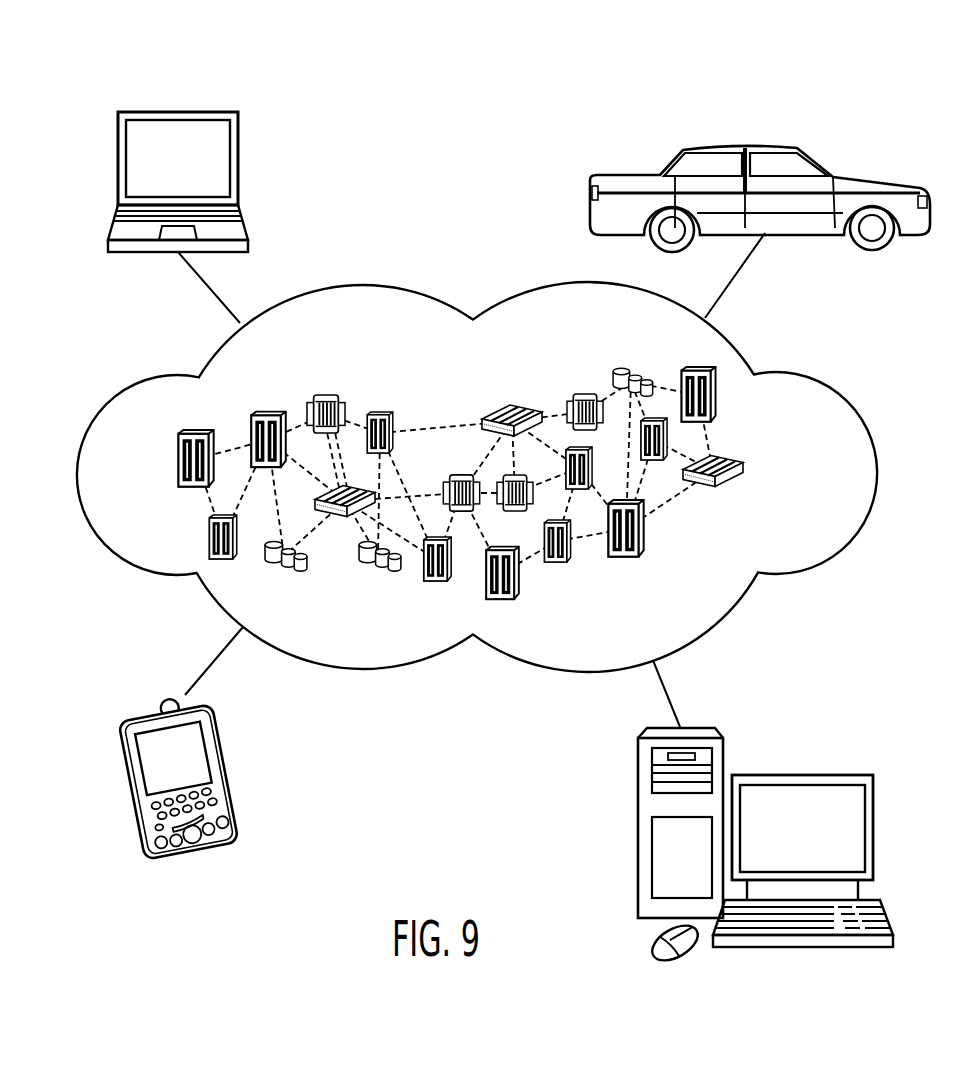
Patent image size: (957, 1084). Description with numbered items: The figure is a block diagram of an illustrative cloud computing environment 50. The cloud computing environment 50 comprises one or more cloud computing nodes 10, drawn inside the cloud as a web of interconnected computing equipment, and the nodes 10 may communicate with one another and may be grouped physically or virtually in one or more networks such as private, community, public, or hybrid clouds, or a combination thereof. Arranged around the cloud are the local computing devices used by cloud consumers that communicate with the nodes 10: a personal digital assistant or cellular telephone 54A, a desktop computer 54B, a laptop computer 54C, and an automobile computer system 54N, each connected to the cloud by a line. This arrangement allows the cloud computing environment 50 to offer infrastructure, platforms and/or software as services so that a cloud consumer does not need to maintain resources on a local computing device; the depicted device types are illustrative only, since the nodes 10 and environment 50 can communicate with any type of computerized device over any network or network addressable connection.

The cloud computing node 10 is at (760, 475).
The cloud computing environment 50 is at (815, 380).
The personal digital assistant or cellular telephone 54A is at (158, 715).
The desktop computer 54B is at (803, 775).
The laptop computer 54C is at (178, 112).
The automobile computer system 54N is at (740, 138).